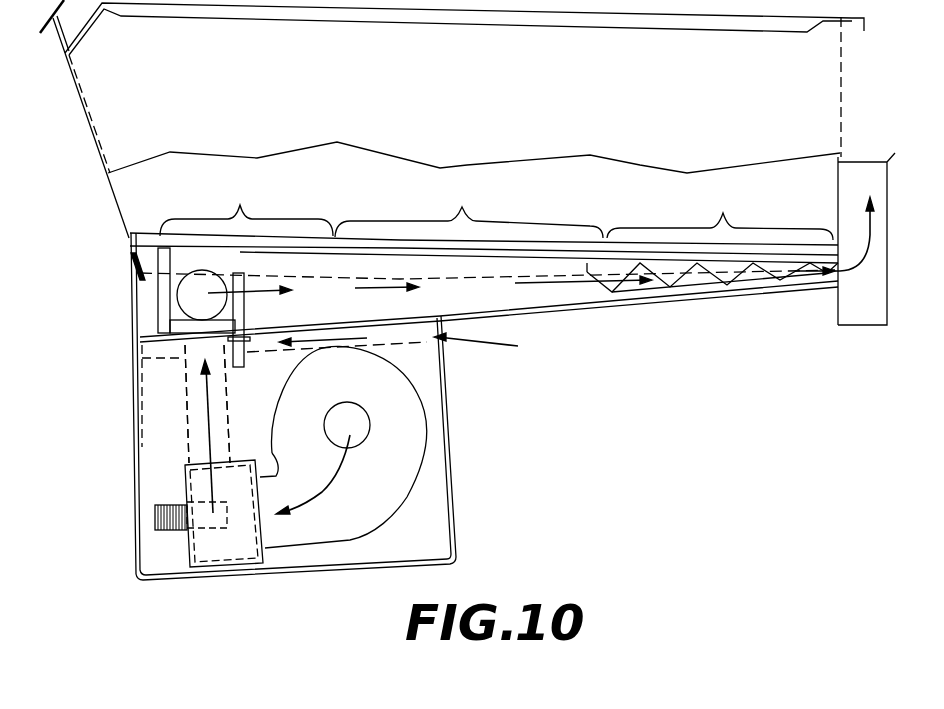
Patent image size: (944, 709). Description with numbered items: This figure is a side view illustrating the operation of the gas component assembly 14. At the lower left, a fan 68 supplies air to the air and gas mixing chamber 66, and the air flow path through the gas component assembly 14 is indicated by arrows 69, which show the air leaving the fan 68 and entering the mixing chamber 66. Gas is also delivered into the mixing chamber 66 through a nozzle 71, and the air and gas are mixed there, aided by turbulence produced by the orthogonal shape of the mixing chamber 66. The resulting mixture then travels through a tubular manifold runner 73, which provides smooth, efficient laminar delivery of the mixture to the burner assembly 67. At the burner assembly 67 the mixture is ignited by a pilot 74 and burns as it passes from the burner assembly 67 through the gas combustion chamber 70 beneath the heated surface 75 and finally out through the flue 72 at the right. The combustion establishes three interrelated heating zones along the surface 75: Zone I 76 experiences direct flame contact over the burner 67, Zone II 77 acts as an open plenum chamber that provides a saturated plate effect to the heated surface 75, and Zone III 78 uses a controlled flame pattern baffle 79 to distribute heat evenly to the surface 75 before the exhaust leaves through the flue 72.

The gas component assembly 14 is at (614, 424).
The air and gas mixing chamber 66 is at (227, 552).
The burner assembly 67 is at (178, 295).
The fan 68 is at (403, 443).
The arrows 69 is at (328, 490).
The gas combustion chamber 70 is at (525, 290).
The nozzle 71 is at (155, 518).
The flue 72 is at (862, 308).
The tubular manifold runner 73 is at (197, 424).
The pilot 74 is at (200, 330).
The heated surface 75 is at (585, 263).
The Zone I 76 is at (246, 206).
The Zone II 77 is at (469, 207).
The Zone III 78 is at (720, 211).
The controlled flame pattern baffle 79 is at (710, 280).